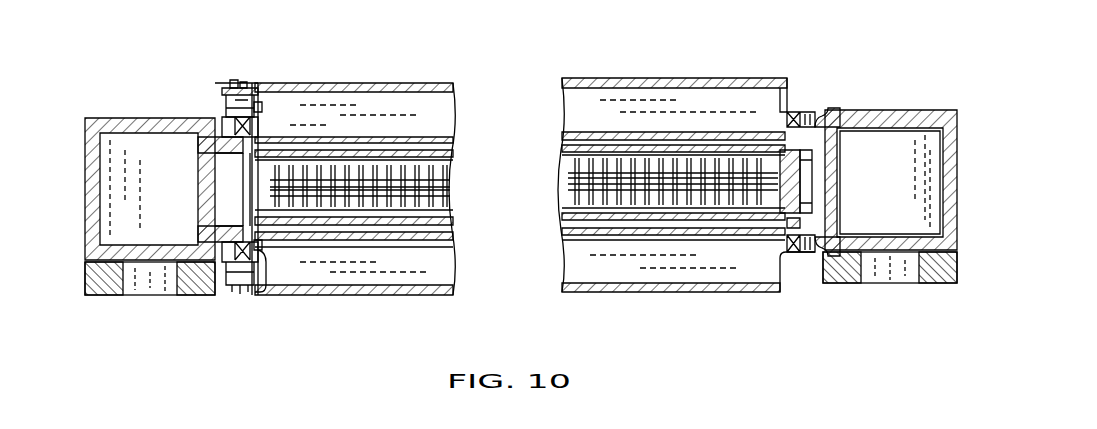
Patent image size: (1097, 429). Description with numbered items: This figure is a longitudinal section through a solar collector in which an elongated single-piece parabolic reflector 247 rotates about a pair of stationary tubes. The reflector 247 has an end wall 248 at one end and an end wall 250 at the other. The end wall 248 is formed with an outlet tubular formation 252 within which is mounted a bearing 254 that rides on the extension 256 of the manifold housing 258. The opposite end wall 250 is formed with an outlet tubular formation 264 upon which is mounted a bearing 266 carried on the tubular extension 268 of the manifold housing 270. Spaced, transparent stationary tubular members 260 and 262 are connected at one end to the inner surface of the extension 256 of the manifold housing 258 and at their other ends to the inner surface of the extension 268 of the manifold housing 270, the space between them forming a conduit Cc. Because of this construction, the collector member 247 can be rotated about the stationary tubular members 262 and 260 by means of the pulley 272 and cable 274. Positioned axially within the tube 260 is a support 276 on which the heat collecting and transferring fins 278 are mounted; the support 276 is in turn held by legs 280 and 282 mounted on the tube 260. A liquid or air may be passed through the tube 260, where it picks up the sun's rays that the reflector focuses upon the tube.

The manifold housing 270 is at (140, 117).
The cable 274 is at (236, 86).
The pulley 272 is at (243, 84).
The outlet tubular formation 264 is at (230, 112).
The bearing 266 is at (263, 130).
The tubular extension 268 is at (242, 140).
The leg 282 is at (243, 212).
The end wall 250 is at (235, 258).
The heat collecting and transferring fins 278 is at (565, 200).
The stationary tubular member 260 is at (622, 155).
The stationary tubular member 262 is at (660, 130).
The parabolic reflector 247 is at (708, 262).
The bearing 254 is at (787, 118).
The end wall 248 is at (785, 95).
The outlet tubular formation 252 is at (805, 108).
The support 276 is at (773, 222).
The leg 280 is at (805, 206).
The manifold housing 258 is at (893, 110).
The extension 256 is at (840, 145).
The conduit Cc is at (672, 212).